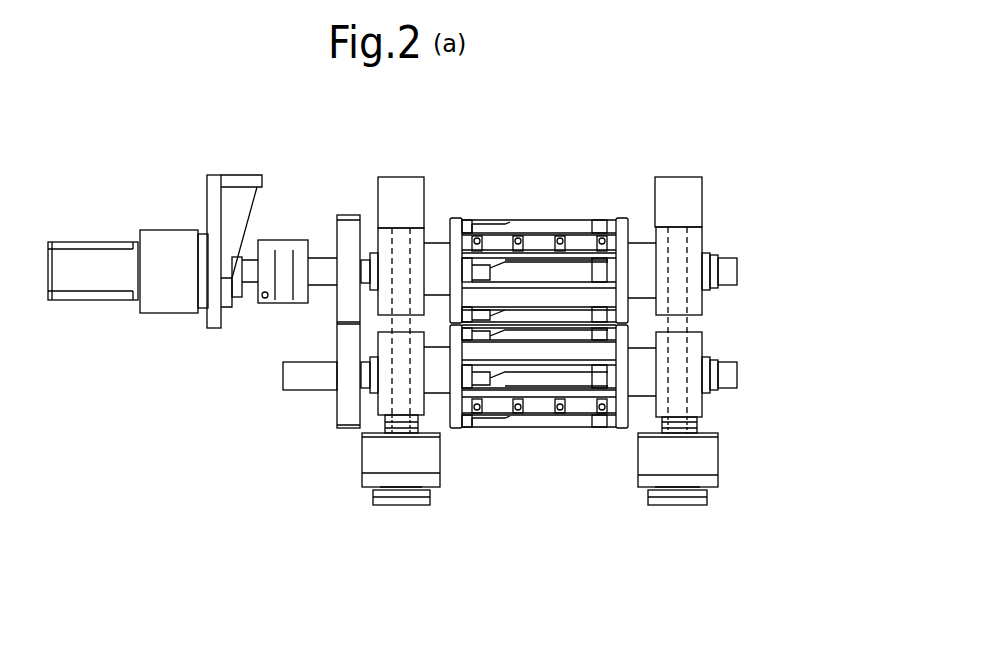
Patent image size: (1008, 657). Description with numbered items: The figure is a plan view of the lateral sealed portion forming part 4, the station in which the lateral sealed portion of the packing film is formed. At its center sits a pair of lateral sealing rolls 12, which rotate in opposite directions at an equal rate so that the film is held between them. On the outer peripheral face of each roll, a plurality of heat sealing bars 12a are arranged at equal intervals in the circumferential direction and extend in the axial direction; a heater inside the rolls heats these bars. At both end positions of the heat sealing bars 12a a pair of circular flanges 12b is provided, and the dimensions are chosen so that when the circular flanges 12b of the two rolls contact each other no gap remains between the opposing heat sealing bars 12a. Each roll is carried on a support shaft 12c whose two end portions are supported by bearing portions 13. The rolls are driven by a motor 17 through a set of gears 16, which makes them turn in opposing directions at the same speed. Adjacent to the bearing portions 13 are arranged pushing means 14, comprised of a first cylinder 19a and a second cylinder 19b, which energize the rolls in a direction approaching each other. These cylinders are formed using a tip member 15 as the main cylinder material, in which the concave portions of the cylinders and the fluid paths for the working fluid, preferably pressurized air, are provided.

The lateral sealed portion forming part 4 is at (553, 300).
The lateral sealing rolls 12 is at (553, 323).
The heat sealing bars 12a is at (538, 220).
The circular flanges 12b is at (455, 218).
The support shaft 12c is at (738, 377).
The bearing portions 13 is at (430, 228).
The pushing means 14 is at (757, 512).
The tip member 15 is at (405, 177).
The set of gears 16 is at (337, 340).
The motor 17 is at (83, 300).
The first cylinder 19a is at (537, 486).
The second cylinder 19b is at (537, 486).